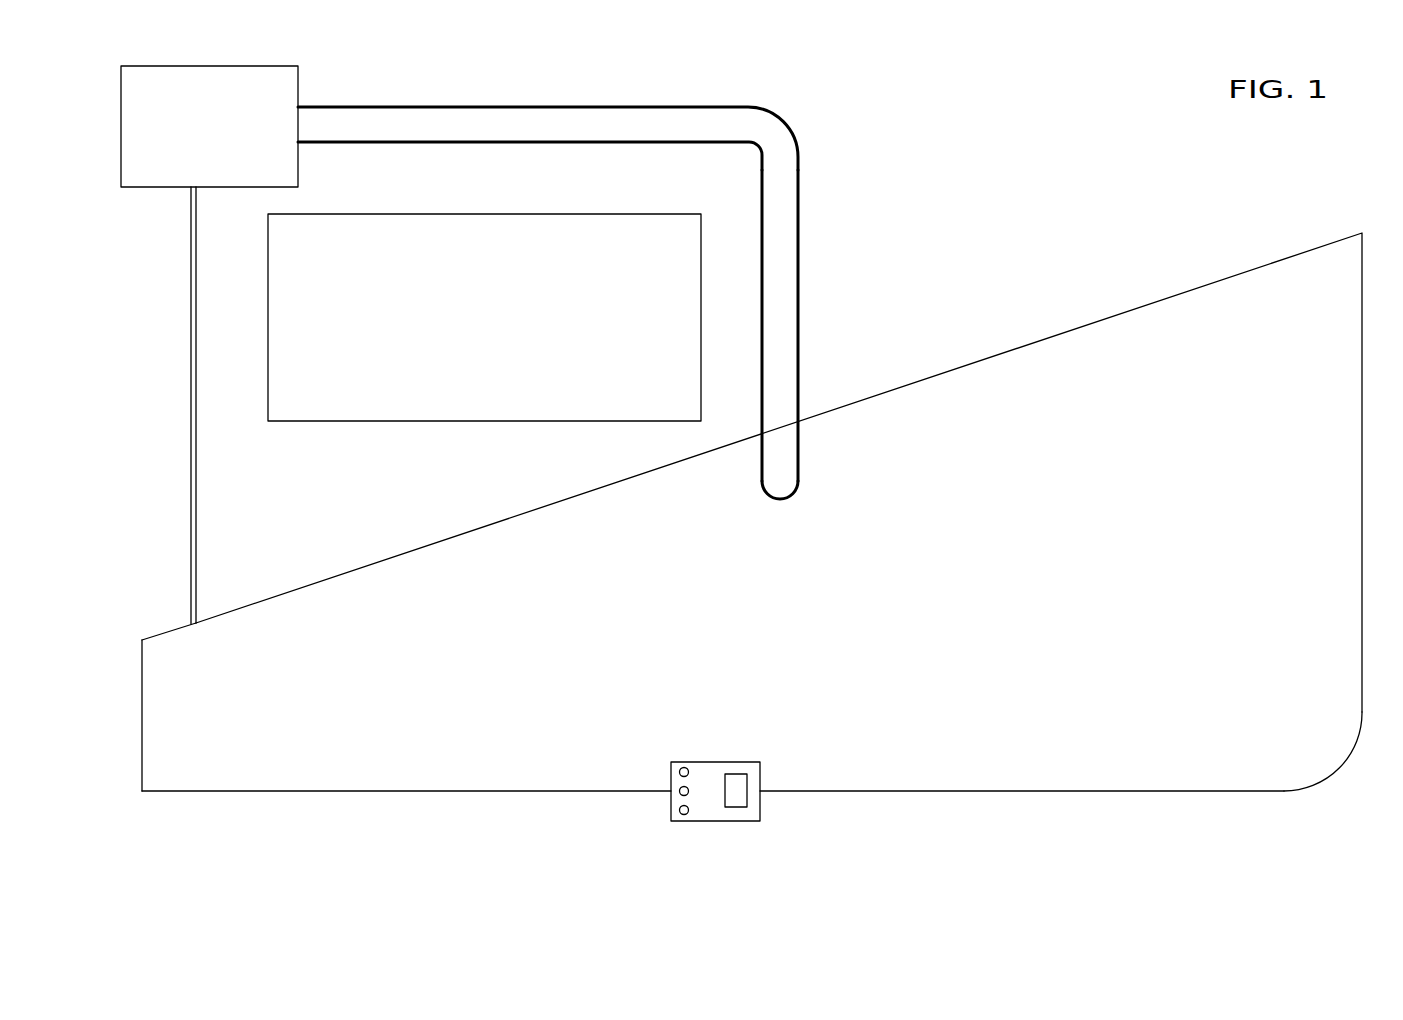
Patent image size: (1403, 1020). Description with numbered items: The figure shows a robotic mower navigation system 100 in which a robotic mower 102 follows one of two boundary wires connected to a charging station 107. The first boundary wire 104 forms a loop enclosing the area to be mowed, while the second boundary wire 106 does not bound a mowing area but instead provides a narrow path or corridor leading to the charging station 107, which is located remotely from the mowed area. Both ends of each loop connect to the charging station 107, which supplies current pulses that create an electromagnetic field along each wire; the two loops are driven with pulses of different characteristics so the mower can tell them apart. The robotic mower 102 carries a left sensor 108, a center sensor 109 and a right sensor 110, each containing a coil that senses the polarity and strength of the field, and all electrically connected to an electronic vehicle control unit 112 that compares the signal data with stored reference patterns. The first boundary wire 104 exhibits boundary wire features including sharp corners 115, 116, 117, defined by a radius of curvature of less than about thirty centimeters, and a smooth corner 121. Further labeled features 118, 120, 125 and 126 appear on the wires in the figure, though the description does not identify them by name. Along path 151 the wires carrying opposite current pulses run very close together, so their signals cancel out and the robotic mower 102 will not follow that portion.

The robotic mower navigation system 100 is at (1063, 152).
The robotic mower 102 is at (722, 762).
The first boundary wire 104 is at (1028, 791).
The second boundary wire 106 is at (590, 300).
The charging station 107 is at (298, 161).
The left sensor 108 is at (678, 808).
The center sensor 109 is at (679, 790).
The right sensor 110 is at (684, 767).
The electronic vehicle control unit 112 is at (740, 775).
The sharp corner 115 is at (1362, 233).
The sharp corner 116 is at (143, 791).
The sharp corner 117 is at (142, 640).
The rounded lower right corner 118 is at (1337, 765).
The outer tube leg 120 is at (800, 412).
The smooth corner 121 is at (760, 432).
The outer tube bend 125 is at (783, 118).
The inner tube bend 126 is at (750, 150).
The path 151 is at (191, 415).